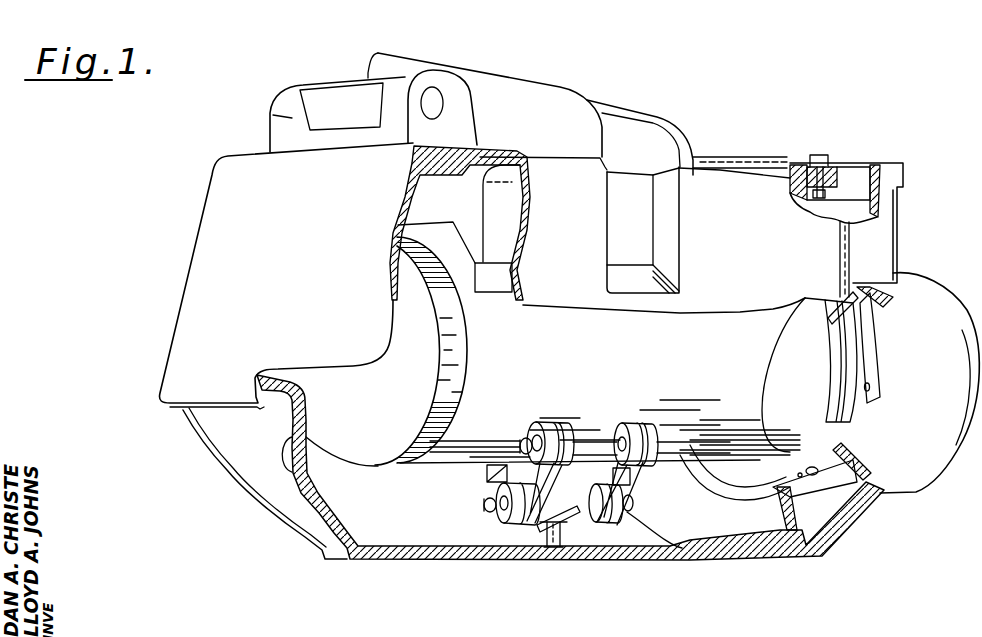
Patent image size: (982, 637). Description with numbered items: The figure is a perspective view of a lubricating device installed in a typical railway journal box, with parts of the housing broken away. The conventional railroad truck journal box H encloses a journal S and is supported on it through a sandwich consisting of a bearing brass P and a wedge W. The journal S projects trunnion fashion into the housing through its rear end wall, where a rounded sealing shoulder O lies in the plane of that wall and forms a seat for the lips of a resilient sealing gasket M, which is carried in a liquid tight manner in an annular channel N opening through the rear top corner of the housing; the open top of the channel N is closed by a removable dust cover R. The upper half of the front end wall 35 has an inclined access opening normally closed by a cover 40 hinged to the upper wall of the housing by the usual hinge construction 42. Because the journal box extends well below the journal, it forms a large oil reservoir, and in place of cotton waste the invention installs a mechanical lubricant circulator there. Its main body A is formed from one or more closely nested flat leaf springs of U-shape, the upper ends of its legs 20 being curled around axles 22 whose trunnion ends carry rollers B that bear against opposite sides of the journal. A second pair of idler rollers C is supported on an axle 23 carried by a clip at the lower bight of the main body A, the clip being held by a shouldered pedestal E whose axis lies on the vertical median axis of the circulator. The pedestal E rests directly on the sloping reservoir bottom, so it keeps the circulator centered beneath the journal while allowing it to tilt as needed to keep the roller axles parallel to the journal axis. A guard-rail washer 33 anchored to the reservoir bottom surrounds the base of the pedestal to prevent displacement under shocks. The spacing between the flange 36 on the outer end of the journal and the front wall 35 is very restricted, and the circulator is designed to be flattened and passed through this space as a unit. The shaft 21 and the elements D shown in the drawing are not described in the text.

The cover 40 is at (197, 323).
The hinge construction 42 is at (443, 104).
The flange 36 is at (352, 455).
The front end wall 35 is at (305, 520).
The washer 33 is at (537, 548).
The shaft 21 is at (595, 442).
The axles 22 is at (518, 440).
The axle 23 is at (485, 503).
The legs 20 is at (584, 493).
The journal box H is at (590, 244).
The wedge W is at (507, 204).
The bearing brass P is at (488, 285).
The journal S is at (647, 353).
The sealing shoulder O is at (826, 377).
The sealing gasket M is at (866, 340).
The dust cover R is at (862, 160).
The annular channel N is at (840, 472).
The rollers B is at (546, 423).
The idler rollers C is at (496, 517).
The belt guide lugs D is at (485, 476).
The main body A is at (568, 508).
The pedestal E is at (566, 536).